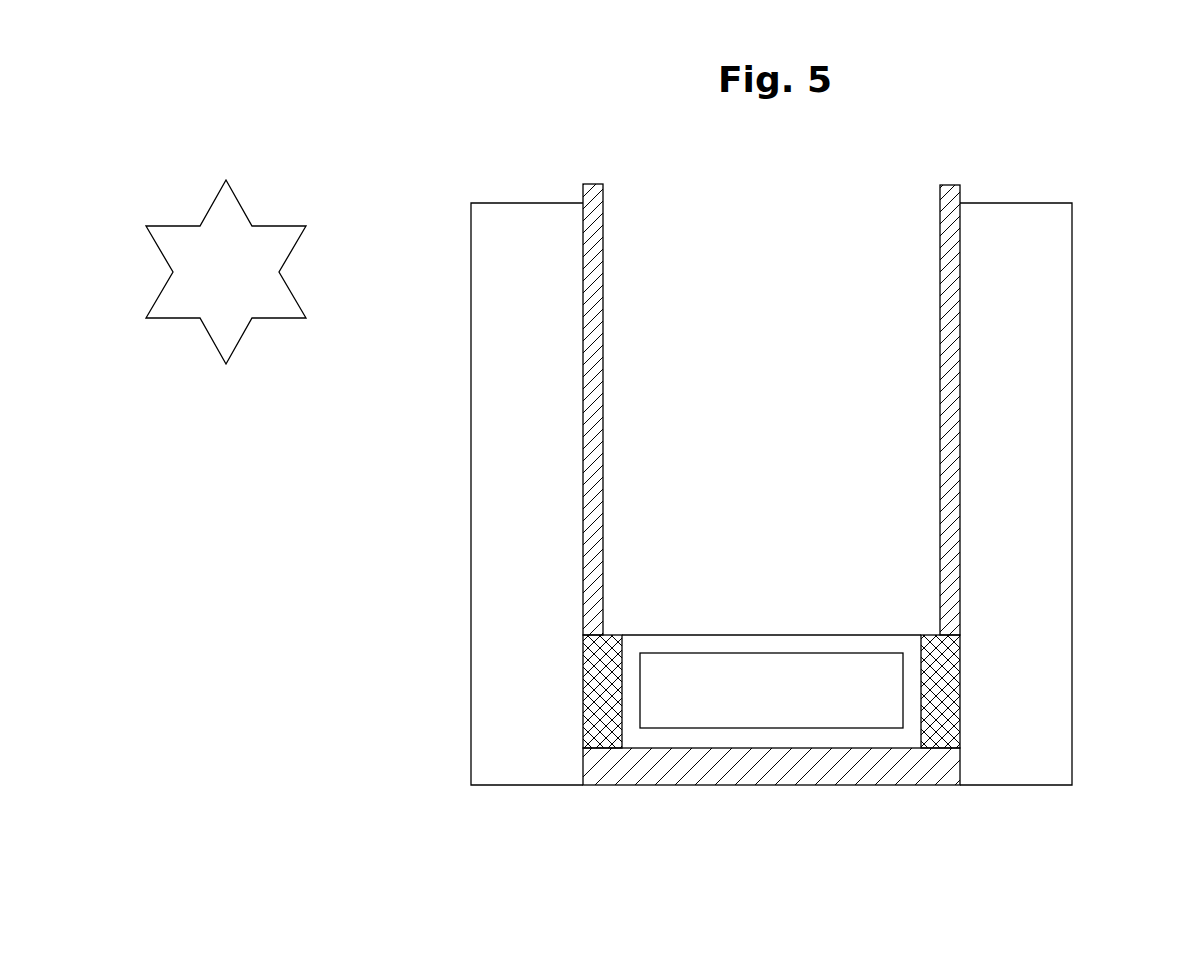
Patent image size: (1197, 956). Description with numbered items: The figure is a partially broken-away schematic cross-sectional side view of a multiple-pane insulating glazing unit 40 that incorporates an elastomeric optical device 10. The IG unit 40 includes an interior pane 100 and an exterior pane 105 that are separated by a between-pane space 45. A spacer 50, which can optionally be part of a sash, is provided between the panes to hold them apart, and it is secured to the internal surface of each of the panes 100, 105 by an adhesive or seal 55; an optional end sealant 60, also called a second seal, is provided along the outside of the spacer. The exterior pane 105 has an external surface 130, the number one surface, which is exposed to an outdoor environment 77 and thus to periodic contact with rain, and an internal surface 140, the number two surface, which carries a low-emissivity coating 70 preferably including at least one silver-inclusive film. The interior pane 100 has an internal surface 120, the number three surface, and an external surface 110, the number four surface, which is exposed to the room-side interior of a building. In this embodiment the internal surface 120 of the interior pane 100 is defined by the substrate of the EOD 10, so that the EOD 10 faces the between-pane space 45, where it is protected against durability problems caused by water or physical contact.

The elastomeric optical device 10 is at (952, 166).
The insulating glazing unit 40 is at (472, 150).
The between-pane space 45 is at (779, 238).
The spacer 50 is at (771, 700).
The adhesive or seal 55 is at (602, 656).
The end sealant 60 is at (877, 770).
The low-emissivity coating 70 is at (595, 312).
The outdoor environment 77 is at (226, 272).
The interior pane 100 is at (1022, 775).
The exterior pane 105 is at (527, 778).
The external surface 110 is at (1073, 238).
The internal surface 120 is at (958, 240).
The external surface 130 is at (471, 255).
The internal surface 140 is at (594, 210).